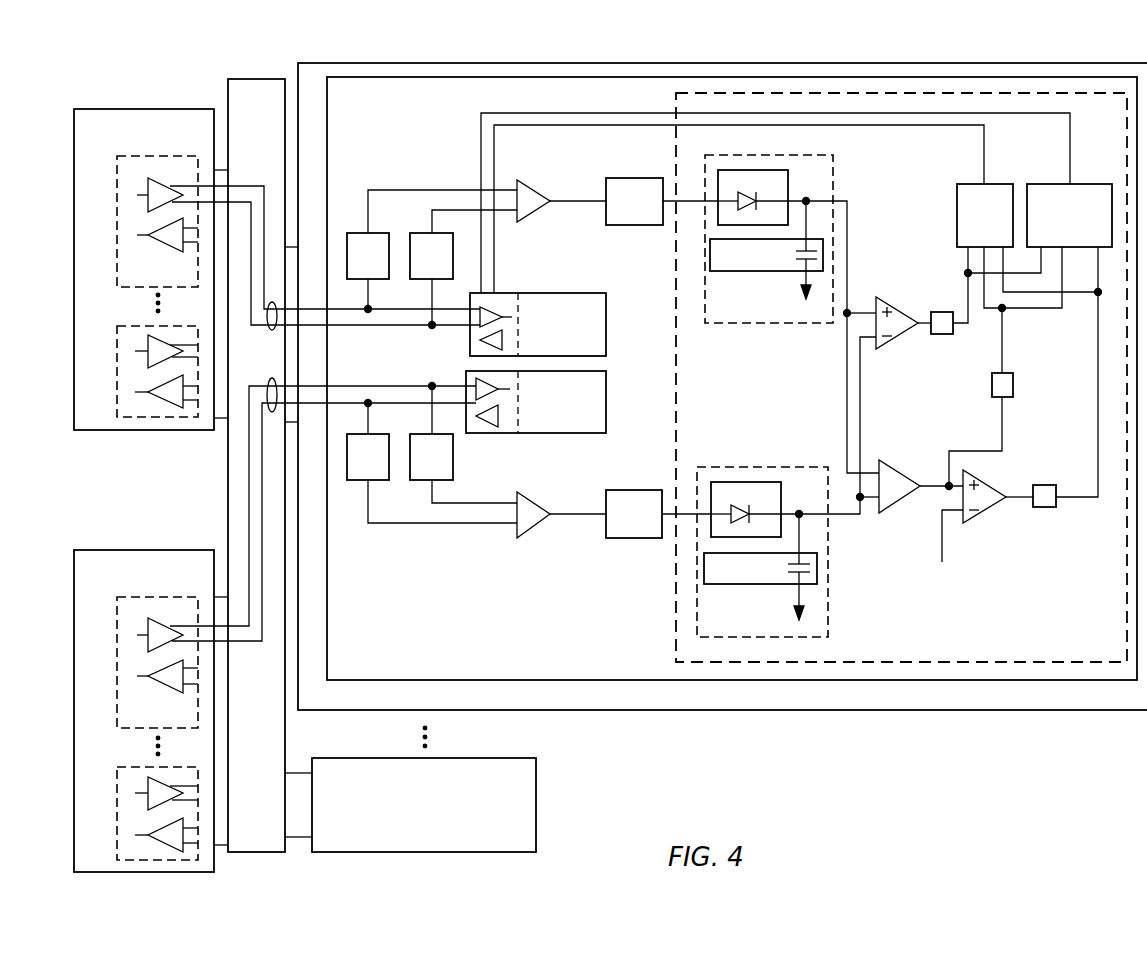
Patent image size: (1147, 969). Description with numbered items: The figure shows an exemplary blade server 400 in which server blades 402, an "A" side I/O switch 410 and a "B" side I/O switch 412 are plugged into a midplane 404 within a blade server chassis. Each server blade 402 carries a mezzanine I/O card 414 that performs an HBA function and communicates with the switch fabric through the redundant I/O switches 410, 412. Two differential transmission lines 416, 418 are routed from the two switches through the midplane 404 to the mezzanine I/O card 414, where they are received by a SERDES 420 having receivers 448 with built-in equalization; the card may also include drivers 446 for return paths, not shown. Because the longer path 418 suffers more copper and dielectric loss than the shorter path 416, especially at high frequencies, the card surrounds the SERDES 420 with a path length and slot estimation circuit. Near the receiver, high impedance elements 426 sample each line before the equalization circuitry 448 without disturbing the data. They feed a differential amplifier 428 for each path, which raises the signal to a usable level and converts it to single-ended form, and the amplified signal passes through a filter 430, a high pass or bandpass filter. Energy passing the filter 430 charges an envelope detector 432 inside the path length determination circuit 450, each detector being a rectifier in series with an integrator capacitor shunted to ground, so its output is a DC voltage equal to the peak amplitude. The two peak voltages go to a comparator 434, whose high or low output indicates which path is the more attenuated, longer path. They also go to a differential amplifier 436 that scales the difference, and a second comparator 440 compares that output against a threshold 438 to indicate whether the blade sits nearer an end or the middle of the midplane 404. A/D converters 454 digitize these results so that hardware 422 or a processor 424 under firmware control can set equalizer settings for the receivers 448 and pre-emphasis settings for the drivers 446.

The blade server 400 is at (724, 754).
The server blade 402 is at (716, 457).
The midplane 404 is at (258, 444).
The "A" side I/O switch 410 is at (151, 269).
The "B" side I/O switch 412 is at (151, 711).
The mezzanine I/O card 414 is at (732, 378).
The short path transmission line 416 is at (271, 333).
The long path transmission line 418 is at (271, 412).
The SERDES 420 is at (536, 363).
The hardware 422 is at (798, 218).
The processor 424 is at (796, 203).
The high impedance elements 426 is at (432, 356).
The differential amplifier 428 is at (544, 369).
The filter 430 is at (662, 358).
The envelope detector 432 is at (789, 384).
The comparator 434 is at (900, 303).
The differential amplifier 436 is at (921, 463).
The threshold 438 is at (942, 578).
The second comparator 440 is at (1026, 490).
The drivers 446 is at (487, 422).
The receiver 448 is at (493, 306).
The path length determination circuit 450 is at (1035, 661).
The A/D converters 454 is at (1013, 399).